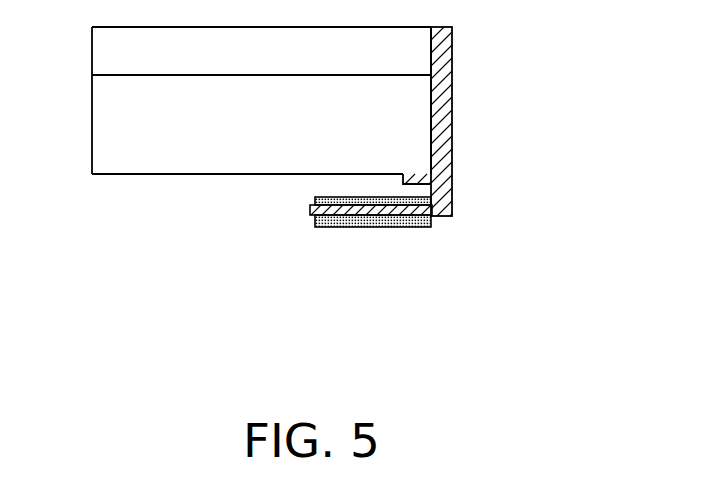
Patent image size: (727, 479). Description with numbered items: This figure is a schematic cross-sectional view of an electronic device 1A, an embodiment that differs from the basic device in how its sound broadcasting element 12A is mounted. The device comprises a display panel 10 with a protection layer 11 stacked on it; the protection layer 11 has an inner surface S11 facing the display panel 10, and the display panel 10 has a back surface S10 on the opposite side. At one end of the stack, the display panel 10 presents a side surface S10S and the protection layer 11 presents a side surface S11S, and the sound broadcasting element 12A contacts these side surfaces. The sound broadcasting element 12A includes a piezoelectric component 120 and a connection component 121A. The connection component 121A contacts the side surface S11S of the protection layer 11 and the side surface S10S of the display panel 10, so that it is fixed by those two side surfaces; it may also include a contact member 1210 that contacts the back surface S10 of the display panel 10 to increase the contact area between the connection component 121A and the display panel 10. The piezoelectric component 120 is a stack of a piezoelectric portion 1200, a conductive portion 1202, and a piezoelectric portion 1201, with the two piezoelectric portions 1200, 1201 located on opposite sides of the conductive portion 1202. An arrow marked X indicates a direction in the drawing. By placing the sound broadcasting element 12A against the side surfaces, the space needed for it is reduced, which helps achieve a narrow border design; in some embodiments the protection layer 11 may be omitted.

The electronic device 1A is at (628, 328).
The display panel 10 is at (108, 131).
The protection layer 11 is at (103, 52).
The back surface S10 is at (112, 175).
The inner surface S11 is at (119, 75).
The side surface S10S is at (433, 125).
The side surface S11S is at (433, 60).
The sound broadcasting element 12A is at (532, 318).
The connection component 121A is at (442, 155).
The contact member 1210 is at (402, 178).
The piezoelectric component 120 is at (470, 278).
The piezoelectric portion 1200 is at (410, 200).
The conductive portion 1202 is at (382, 206).
The piezoelectric portion 1201 is at (332, 222).
The X direction X is at (677, 43).